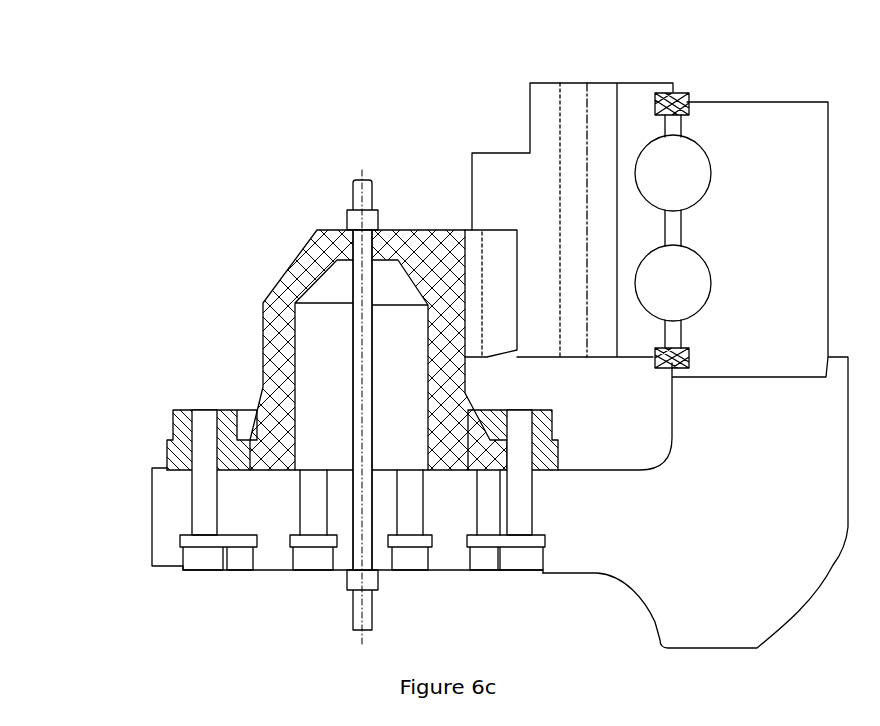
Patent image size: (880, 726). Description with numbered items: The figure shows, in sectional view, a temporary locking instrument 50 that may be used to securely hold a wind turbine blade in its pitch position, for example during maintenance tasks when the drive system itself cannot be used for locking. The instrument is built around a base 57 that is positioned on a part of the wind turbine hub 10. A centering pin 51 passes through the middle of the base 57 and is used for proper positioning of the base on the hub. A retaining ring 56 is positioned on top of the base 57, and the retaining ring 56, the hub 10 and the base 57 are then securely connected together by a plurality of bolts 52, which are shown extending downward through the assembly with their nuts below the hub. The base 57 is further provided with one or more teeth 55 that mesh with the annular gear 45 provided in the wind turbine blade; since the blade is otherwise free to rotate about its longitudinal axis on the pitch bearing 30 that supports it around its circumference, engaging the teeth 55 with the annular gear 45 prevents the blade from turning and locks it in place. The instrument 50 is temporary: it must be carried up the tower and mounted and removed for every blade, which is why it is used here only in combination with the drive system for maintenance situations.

The wind turbine hub 10 is at (157, 496).
The pitch bearing 30 is at (730, 190).
The annular gear 45 is at (490, 190).
The temporary locking instrument 50 is at (218, 243).
The centering pin 51 is at (353, 615).
The bolts 52 is at (517, 553).
The teeth 55 is at (490, 257).
The retaining ring 56 is at (173, 410).
The base 57 is at (263, 343).